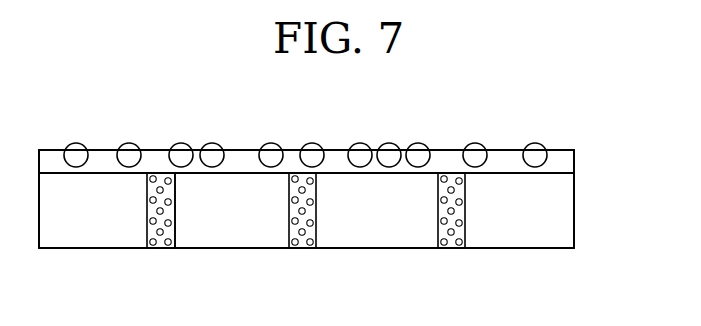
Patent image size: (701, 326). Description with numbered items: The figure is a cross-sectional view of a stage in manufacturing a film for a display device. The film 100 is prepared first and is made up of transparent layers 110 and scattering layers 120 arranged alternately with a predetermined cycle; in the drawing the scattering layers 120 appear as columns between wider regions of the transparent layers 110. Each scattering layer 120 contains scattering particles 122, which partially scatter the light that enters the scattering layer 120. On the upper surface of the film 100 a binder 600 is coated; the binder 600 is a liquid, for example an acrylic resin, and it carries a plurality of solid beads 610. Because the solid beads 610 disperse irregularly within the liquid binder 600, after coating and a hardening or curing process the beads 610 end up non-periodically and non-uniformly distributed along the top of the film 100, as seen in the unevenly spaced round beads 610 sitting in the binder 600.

The film 100 is at (577, 208).
The transparent layer 110 is at (92, 237).
The scattering layer 120 is at (162, 245).
The scattering particle 122 is at (175, 240).
The binder 600 is at (565, 162).
The bead 610 is at (534, 149).